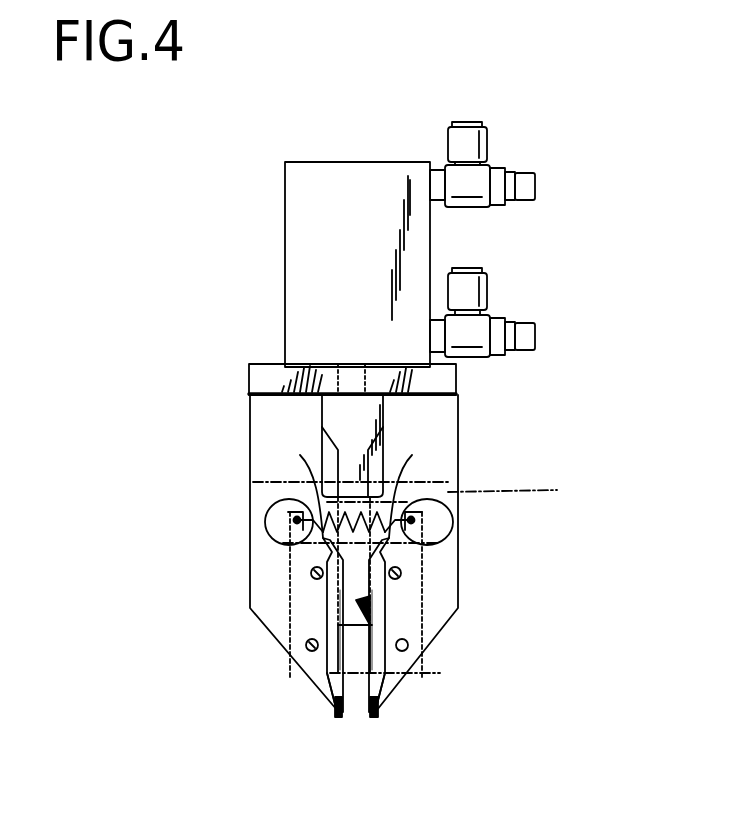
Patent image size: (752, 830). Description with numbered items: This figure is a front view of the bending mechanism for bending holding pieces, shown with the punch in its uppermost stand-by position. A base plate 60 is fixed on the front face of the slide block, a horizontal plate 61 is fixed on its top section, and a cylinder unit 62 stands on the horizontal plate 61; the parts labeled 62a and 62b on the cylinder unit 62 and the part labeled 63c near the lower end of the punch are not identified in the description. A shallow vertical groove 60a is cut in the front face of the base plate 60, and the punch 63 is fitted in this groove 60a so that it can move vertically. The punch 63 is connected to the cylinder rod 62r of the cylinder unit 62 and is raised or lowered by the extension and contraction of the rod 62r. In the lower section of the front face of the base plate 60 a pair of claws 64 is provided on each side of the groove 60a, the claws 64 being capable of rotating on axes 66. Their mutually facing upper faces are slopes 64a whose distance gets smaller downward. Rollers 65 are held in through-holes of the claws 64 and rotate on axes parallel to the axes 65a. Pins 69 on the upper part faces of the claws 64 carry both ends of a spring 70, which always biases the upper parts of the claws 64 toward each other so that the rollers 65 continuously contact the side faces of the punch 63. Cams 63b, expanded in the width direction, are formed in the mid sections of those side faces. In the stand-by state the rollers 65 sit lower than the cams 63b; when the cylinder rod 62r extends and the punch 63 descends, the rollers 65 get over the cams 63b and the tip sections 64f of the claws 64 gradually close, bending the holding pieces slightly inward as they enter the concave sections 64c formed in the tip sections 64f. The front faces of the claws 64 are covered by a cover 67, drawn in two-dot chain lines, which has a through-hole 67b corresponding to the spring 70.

The base plate 60 is at (305, 642).
The vertical groove 60a is at (408, 648).
The horizontal plate 61 is at (255, 377).
The cylinder unit 62 is at (305, 249).
The air fitting 62a is at (487, 147).
The air fitting 62b is at (487, 297).
The cylinder rod 62r is at (335, 378).
The punch 63 is at (328, 424).
The cams 63b is at (323, 500).
The cam tip 63c is at (375, 650).
The claws 64 is at (290, 612).
The slopes 64a is at (318, 548).
The concave sections 64c is at (342, 712).
The tip sections 64f is at (327, 702).
The rollers 65 is at (325, 600).
The axes 65a is at (311, 574).
The axes 66 is at (297, 667).
The cover 67 is at (395, 470).
The through-hole 67b is at (526, 490).
The pins 69 is at (293, 520).
The spring 70 is at (268, 505).